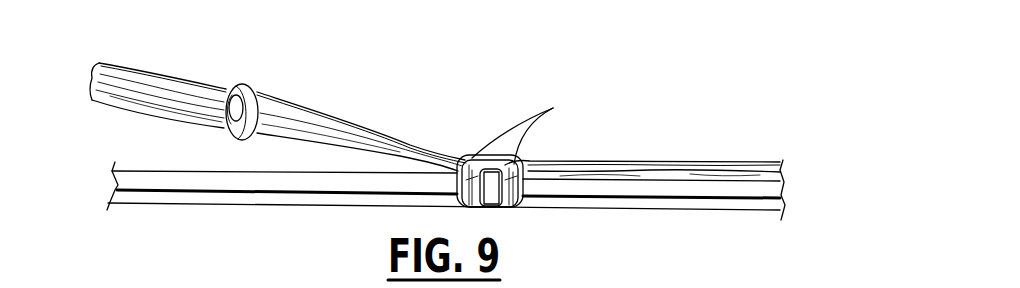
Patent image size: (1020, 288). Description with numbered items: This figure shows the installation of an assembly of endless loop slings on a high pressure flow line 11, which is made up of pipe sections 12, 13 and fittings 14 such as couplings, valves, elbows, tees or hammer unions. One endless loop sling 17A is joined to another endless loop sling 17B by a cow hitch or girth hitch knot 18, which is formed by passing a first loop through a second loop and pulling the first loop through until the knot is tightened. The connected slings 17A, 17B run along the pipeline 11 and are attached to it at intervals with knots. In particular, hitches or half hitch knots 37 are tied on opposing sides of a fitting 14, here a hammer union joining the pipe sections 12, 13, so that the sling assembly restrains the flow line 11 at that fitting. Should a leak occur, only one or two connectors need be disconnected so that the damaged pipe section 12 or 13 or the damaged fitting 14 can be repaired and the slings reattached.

The high pressure flow line 11 is at (287, 193).
The pipe section 12 is at (683, 190).
The pipe section 13 is at (148, 182).
The fitting 14 is at (490, 208).
The endless loop sling 17A is at (168, 89).
The endless loop sling 17B is at (407, 133).
The cow hitch or girth hitch knot 18 is at (251, 85).
The hitch or half hitch knot 37 is at (545, 115).